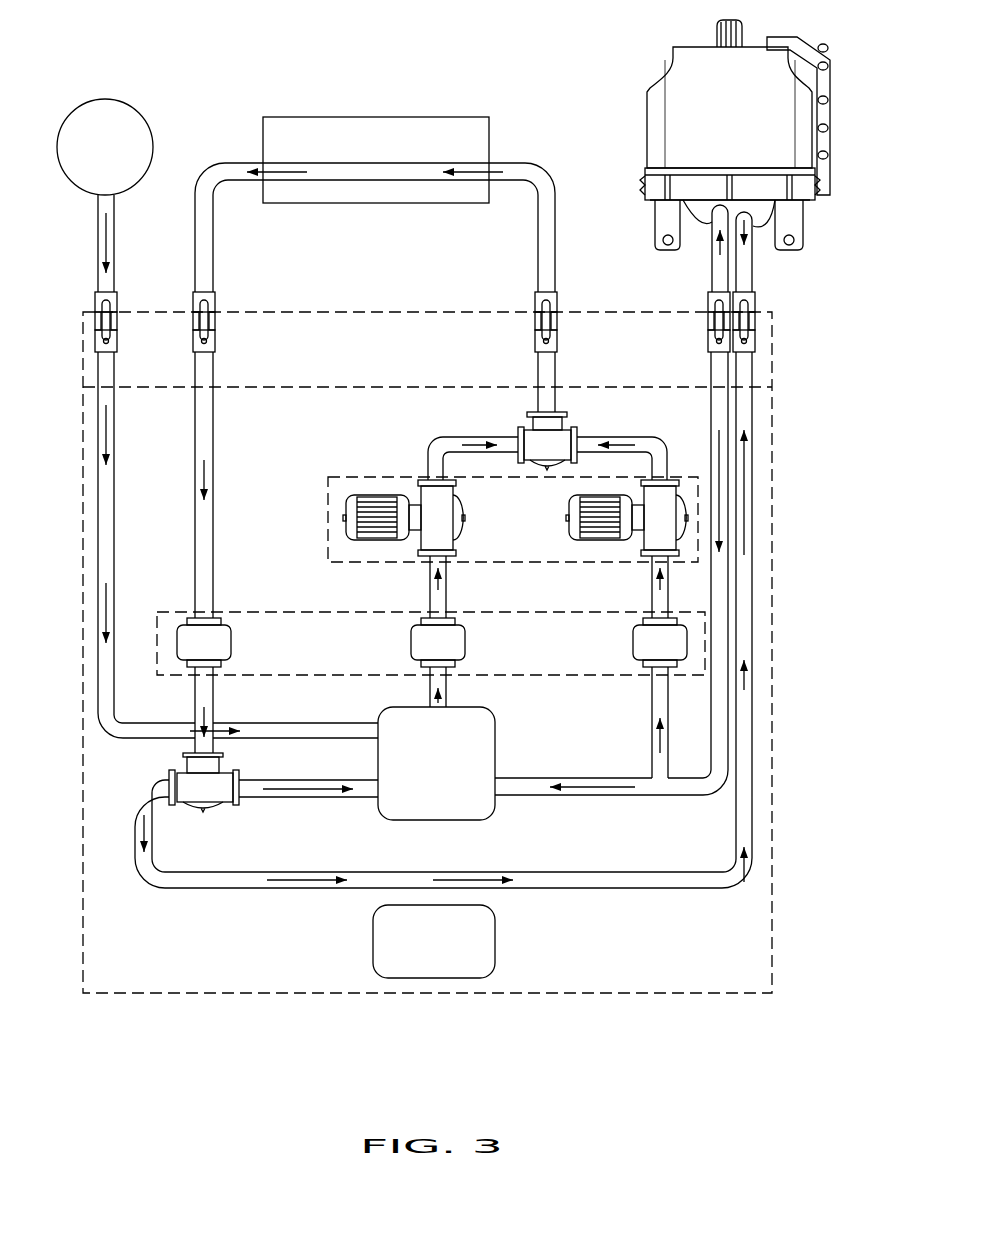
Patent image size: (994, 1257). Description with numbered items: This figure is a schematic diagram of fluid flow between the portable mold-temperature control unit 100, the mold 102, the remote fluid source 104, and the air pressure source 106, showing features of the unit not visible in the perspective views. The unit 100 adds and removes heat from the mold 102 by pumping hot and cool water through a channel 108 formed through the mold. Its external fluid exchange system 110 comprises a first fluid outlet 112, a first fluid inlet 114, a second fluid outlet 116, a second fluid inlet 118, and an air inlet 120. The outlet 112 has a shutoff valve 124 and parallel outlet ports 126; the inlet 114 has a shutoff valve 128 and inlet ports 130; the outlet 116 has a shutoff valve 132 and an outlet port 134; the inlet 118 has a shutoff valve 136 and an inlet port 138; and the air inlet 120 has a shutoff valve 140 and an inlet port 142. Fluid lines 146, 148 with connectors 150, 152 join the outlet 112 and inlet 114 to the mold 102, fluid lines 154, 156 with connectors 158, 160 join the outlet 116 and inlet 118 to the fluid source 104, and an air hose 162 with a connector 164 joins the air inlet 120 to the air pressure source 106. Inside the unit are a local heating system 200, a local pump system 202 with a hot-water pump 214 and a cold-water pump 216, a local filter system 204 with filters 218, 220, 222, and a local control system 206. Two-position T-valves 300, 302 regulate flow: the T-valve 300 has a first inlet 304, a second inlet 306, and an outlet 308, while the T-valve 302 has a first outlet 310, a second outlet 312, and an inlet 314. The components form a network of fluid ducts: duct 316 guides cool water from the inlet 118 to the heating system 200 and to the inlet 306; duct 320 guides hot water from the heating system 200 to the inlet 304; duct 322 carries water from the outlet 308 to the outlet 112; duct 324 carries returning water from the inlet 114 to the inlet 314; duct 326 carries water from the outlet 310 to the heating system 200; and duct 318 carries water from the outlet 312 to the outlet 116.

The mold-temperature control unit 100 is at (716, 971).
The mold 102 is at (394, 146).
The remote fluid source 104 is at (748, 142).
The air pressure source 106 is at (123, 156).
The channel 108 is at (358, 172).
The external fluid exchange system 110 is at (363, 361).
The first fluid outlet 112 is at (539, 312).
The first fluid inlet 114 is at (214, 309).
The second fluid outlet 116 is at (792, 316).
The second fluid inlet 118 is at (671, 319).
The air inlet 120 is at (114, 309).
The shutoff valve 124 is at (537, 352).
The outlet ports 126 is at (537, 322).
The shutoff valve 128 is at (215, 352).
The inlet ports 130 is at (215, 322).
The shutoff valve 132 is at (755, 352).
The outlet port 134 is at (755, 325).
The shutoff valve 136 is at (708, 352).
The inlet port 138 is at (708, 325).
The shutoff valve 140 is at (117, 352).
The inlet port 142 is at (117, 322).
The fluid line 146 is at (543, 252).
The fluid line 148 is at (203, 243).
The connector 150 is at (538, 298).
The connector 152 is at (208, 300).
The fluid line 154 is at (745, 275).
The fluid line 156 is at (717, 275).
The connector 158 is at (750, 298).
The connector 160 is at (712, 298).
The air hose 162 is at (118, 200).
The connector 164 is at (108, 300).
The local heating system 200 is at (455, 782).
The local pump system 202 is at (513, 519).
The local filter system 204 is at (431, 643).
The local control system 206 is at (452, 956).
The hot-water pump 214 is at (404, 518).
The cold-water pump 216 is at (627, 518).
The filter 218 is at (660, 642).
The filter 220 is at (438, 642).
The filter 222 is at (204, 642).
The T-valve 300 is at (547, 428).
The T-valve 302 is at (204, 783).
The first inlet 304 is at (518, 438).
The second inlet 306 is at (592, 438).
The outlet 308 is at (560, 412).
The first outlet 310 is at (240, 802).
The second outlet 312 is at (172, 788).
The inlet 314 is at (207, 754).
The fluid duct 316 is at (650, 450).
The fluid duct 318 is at (745, 593).
The fluid duct 320 is at (445, 452).
The fluid duct 322 is at (541, 388).
The fluid duct 324 is at (218, 533).
The fluid duct 326 is at (265, 787).